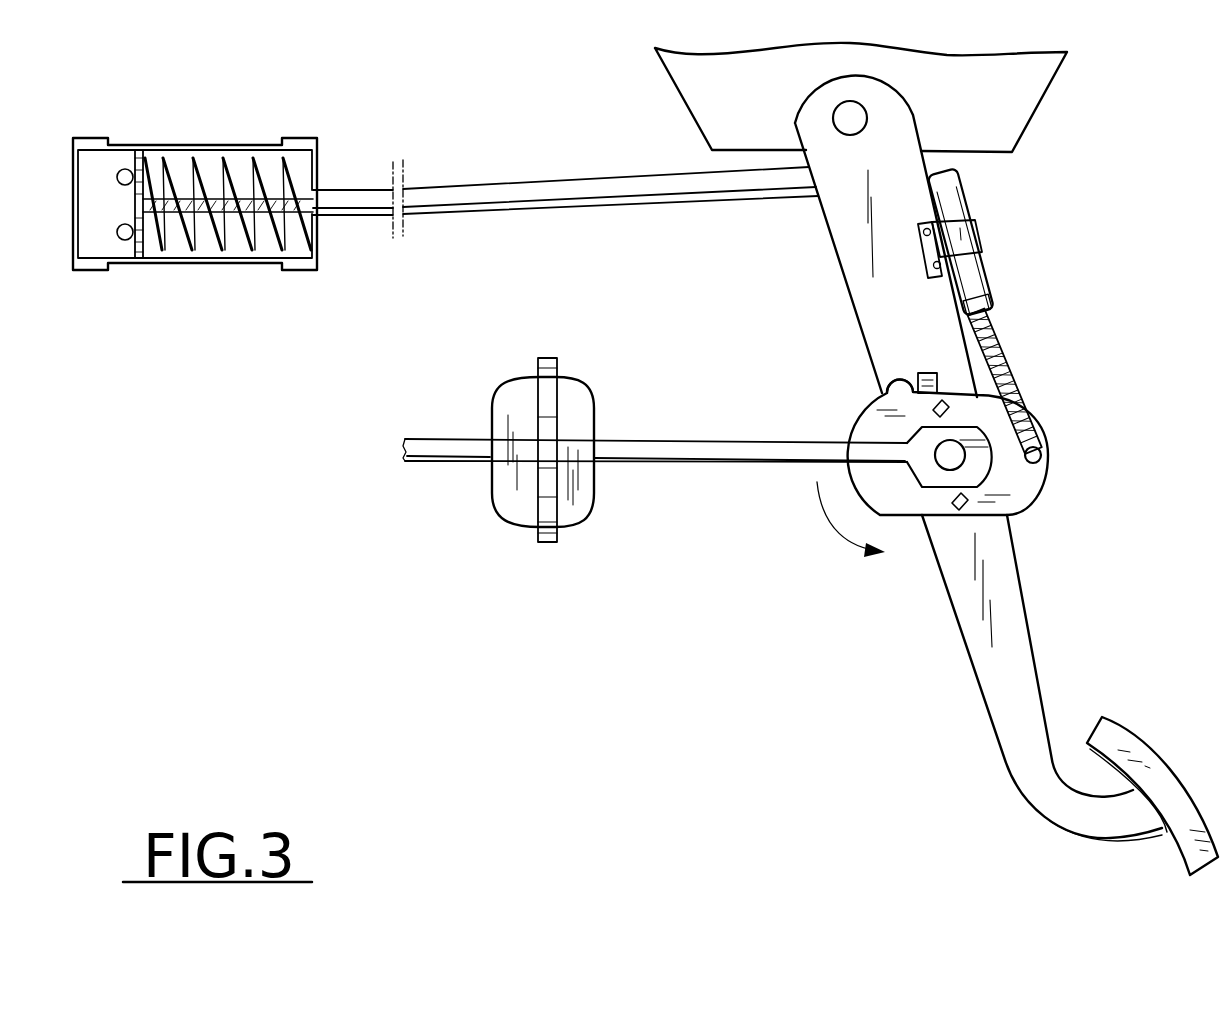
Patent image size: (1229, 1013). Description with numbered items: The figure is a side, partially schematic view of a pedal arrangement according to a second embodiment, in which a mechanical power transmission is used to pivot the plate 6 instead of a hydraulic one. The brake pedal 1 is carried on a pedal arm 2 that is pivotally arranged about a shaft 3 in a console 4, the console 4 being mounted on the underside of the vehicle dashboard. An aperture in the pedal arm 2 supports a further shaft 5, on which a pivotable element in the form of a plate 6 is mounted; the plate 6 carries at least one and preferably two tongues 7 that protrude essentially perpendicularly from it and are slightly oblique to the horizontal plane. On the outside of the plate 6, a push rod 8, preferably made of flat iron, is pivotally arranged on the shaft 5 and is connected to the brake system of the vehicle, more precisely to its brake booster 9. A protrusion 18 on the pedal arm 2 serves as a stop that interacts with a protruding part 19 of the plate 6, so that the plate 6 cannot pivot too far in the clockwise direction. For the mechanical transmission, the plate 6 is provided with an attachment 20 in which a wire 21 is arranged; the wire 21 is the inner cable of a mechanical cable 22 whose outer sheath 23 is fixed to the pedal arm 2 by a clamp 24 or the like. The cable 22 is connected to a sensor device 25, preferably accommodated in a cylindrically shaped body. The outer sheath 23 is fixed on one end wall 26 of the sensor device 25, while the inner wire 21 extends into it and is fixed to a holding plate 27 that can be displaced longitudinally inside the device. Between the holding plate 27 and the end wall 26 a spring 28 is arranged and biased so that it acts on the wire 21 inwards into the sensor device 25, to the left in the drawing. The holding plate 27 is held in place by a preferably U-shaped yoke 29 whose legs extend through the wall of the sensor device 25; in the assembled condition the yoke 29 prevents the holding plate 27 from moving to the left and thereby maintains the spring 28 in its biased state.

The brake pedal 1 is at (998, 806).
The pedal arm 2 is at (1015, 673).
The shaft 3 is at (863, 108).
The console 4 is at (998, 122).
The further shaft 5 is at (952, 460).
The plate 6 is at (1030, 477).
The tongues 7 is at (948, 407).
The push rod 8 is at (692, 452).
The brake booster 9 is at (580, 483).
The protrusion 18 is at (918, 378).
The protruding part 19 is at (884, 390).
The attachment 20 is at (1039, 449).
The wire 21 is at (229, 214).
The mechanical cable 22 is at (697, 221).
The outer sheath 23 is at (943, 183).
The clamp 24 is at (980, 235).
The sensor device 25 is at (232, 126).
The end wall 26 is at (318, 243).
The holding plate 27 is at (142, 146).
The spring 28 is at (188, 237).
The yoke 29 is at (118, 243).